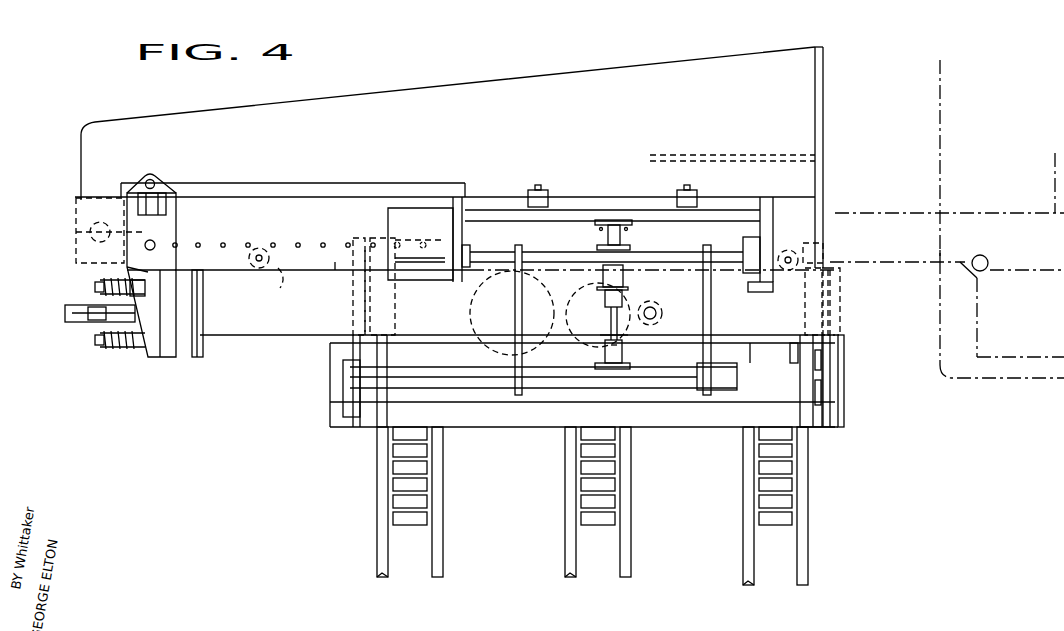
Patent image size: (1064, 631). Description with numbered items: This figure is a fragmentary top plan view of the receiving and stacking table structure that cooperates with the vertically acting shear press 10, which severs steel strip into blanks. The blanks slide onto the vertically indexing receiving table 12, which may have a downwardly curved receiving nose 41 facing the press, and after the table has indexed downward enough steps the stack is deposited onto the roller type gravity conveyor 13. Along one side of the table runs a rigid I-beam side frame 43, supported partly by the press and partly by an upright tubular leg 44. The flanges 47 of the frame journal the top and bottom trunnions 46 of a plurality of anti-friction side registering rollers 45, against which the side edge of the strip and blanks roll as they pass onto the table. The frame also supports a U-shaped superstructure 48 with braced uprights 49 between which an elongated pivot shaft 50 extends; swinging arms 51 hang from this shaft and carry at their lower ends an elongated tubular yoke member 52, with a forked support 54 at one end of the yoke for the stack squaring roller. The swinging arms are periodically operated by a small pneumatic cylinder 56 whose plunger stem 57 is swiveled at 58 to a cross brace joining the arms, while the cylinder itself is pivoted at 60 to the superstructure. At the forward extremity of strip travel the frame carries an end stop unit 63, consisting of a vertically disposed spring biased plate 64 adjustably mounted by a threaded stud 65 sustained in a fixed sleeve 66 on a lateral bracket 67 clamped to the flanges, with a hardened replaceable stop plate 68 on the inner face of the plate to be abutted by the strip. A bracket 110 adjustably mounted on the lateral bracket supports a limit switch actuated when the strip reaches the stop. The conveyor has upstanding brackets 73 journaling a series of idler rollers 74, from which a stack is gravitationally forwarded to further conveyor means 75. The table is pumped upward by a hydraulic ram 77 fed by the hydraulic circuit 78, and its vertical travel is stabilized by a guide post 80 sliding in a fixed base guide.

The shear press 10 is at (963, 383).
The receiving table 12 is at (757, 363).
The roller type gravity conveyor 13 is at (842, 403).
The receiving nose 41 is at (790, 352).
The I-beam side frame 43 is at (274, 186).
The upright tubular leg 44 is at (76, 226).
The side registering rollers 45 is at (284, 282).
The trunnions 46 is at (259, 262).
The flanges 47 is at (330, 264).
The U-shaped superstructure 48 is at (475, 232).
The braced uprights 49 is at (470, 274).
The pivot shaft 50 is at (660, 257).
The swinging arms 51 is at (545, 252).
The tubular yoke member 52 is at (615, 378).
The forked support 54 is at (358, 412).
The pneumatic cylinder 56 is at (625, 277).
The plunger stem 57 is at (622, 333).
The swivel 58 is at (600, 357).
The pivot 60 is at (625, 238).
The end stop unit 63 is at (160, 362).
The spring biased plate 64 is at (194, 358).
The stud 65 is at (95, 317).
The fixed sleeve 66 is at (136, 318).
The lateral bracket 67 is at (147, 271).
The stop plate 68 is at (205, 350).
The upstanding brackets 73 is at (357, 350).
The idler rollers 74 is at (385, 346).
The further conveyor means 75 is at (375, 525).
The hydraulic ram 77 is at (566, 315).
The hydraulic circuit 78 is at (470, 340).
The guide post 80 is at (662, 312).
The bracket 110 is at (428, 279).